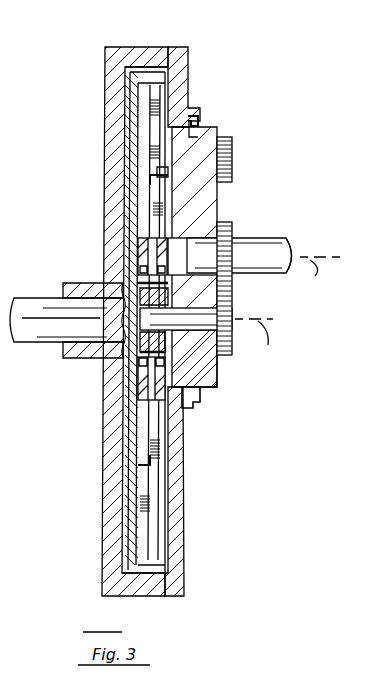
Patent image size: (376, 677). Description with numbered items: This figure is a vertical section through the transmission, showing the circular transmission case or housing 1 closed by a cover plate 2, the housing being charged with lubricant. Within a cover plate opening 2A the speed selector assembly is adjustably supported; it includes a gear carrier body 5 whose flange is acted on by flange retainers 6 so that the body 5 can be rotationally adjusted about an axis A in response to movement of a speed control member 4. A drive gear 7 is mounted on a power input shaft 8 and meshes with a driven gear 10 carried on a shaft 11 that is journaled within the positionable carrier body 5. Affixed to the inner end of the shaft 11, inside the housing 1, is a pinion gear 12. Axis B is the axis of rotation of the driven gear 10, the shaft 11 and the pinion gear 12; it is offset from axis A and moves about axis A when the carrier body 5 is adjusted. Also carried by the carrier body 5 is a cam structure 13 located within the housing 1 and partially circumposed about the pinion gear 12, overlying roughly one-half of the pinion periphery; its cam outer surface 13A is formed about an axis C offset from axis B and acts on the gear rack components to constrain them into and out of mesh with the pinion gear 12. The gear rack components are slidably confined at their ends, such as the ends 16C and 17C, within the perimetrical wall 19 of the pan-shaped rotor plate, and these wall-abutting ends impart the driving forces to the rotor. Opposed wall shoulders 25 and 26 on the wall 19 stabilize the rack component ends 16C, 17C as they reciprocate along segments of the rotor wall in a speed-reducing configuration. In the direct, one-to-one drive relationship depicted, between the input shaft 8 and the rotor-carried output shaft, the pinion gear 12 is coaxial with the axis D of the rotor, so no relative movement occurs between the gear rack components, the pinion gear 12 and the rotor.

The transmission case or housing 1 is at (137, 52).
The cover plate 2 is at (188, 59).
The cover plate opening 2A is at (173, 155).
The speed control member 4 is at (225, 156).
The gear carrier body 5 is at (217, 382).
The flange retainers 6 is at (198, 398).
The drive gear 7 is at (232, 224).
The power input shaft 8 is at (282, 243).
The driven gear 10 is at (232, 301).
The shaft 11 is at (212, 316).
The pinion gear 12 is at (165, 343).
The cam structure 13 is at (167, 287).
The cam outer surface 13A is at (162, 246).
The gear rack component end 16C is at (168, 171).
The gear rack component end 17C is at (137, 459).
The perimetrical wall 19 is at (152, 72).
The wall shoulder 25 is at (162, 100).
The wall shoulder 26 is at (152, 478).
The axis A is at (320, 275).
The axis B is at (259, 338).
The axis C is at (67, 307).
The axis D is at (47, 320).